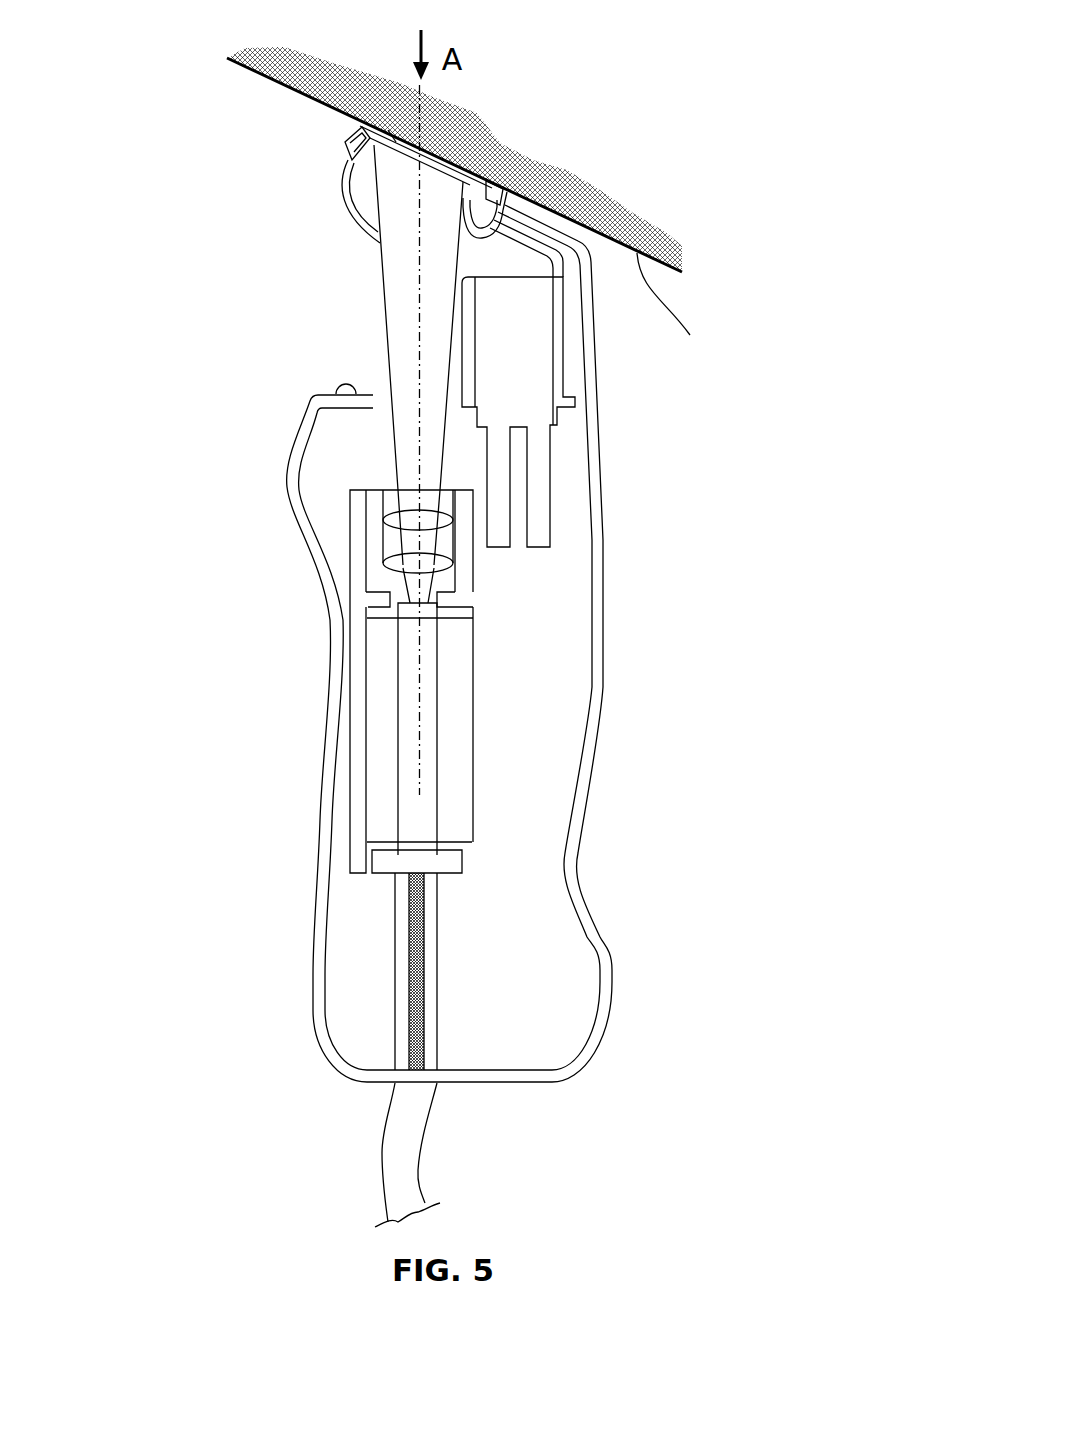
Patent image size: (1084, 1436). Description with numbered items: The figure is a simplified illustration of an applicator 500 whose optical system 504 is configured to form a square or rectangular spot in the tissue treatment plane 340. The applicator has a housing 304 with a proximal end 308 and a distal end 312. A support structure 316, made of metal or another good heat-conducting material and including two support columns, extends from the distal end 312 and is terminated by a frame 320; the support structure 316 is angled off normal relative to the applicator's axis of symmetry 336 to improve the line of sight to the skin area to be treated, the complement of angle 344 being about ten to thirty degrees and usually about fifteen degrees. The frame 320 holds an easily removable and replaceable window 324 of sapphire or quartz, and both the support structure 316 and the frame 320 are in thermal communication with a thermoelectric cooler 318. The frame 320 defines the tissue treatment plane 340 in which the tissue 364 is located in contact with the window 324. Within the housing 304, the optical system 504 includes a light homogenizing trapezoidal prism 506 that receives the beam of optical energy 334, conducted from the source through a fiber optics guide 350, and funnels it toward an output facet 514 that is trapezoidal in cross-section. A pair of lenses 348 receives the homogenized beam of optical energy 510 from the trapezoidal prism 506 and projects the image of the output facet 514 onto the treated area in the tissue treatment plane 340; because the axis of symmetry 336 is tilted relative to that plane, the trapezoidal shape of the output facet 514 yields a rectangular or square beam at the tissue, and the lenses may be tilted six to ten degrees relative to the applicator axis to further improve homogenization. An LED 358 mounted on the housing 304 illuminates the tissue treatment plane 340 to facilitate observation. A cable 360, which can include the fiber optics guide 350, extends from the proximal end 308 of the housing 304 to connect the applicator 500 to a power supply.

The housing 304 is at (327, 833).
The proximal end 308 is at (243, 1101).
The distal end 312 is at (280, 245).
The support structure 316 is at (340, 180).
The thermoelectric cooler 318 is at (494, 379).
The frame 320 is at (348, 132).
The replaceable window 324 is at (394, 138).
The beam of optical energy 334 is at (415, 917).
The axis of symmetry 336 is at (418, 303).
The tissue treatment plane 340 is at (472, 166).
The complement of angle 344 is at (438, 238).
The pair of lenses 348 is at (378, 538).
The fiber optics guide 350 is at (423, 953).
The LED 358 is at (322, 393).
The cable 360 is at (390, 1143).
The tissue 364 is at (675, 321).
The applicator 500 is at (207, 602).
The optical system 504 is at (348, 721).
The trapezoidal prism 506 is at (427, 700).
The homogenized beam of optical energy 510 is at (400, 277).
The output facet 514 is at (414, 608).